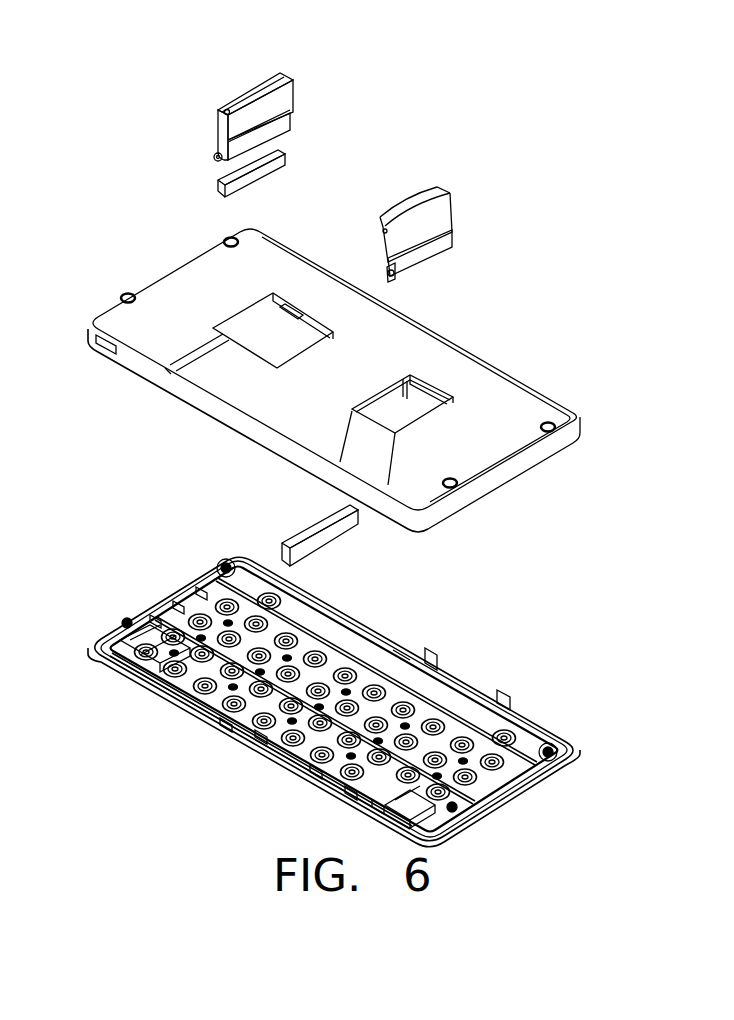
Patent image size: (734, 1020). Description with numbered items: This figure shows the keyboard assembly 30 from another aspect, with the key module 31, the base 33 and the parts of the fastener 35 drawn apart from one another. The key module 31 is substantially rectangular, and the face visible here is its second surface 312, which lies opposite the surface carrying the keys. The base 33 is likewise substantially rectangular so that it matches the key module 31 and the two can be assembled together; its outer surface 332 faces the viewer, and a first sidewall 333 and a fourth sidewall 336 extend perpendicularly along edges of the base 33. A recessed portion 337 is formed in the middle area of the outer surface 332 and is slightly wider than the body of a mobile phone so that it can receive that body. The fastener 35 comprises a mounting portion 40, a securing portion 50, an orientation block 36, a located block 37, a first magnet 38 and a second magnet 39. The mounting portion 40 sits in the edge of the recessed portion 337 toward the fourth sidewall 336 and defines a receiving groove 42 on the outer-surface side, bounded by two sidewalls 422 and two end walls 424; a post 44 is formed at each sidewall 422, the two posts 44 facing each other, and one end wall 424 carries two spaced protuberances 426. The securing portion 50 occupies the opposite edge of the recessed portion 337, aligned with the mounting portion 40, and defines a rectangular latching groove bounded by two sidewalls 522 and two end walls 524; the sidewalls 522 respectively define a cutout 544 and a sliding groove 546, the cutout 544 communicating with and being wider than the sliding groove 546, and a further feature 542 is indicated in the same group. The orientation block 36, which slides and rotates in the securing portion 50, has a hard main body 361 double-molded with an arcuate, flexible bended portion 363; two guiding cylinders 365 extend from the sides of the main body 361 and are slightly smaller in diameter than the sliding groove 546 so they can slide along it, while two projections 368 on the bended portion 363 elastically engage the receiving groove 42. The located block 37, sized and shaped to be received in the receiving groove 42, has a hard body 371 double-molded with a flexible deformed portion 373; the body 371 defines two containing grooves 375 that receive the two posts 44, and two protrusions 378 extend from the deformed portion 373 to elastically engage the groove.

The keyboard 30 is at (384, 51).
The key module 31 is at (540, 682).
The second surface 312 is at (372, 648).
The base 33 is at (598, 410).
The outer surface 332 is at (170, 275).
The first sidewall 333 is at (277, 437).
The fourth sidewall 336 is at (512, 468).
The recessed portion 337 is at (407, 343).
The fastener 35 is at (392, 148).
The orientation block 36 is at (133, 70).
The main body 361 is at (216, 137).
The bended portion 363 is at (222, 124).
The guiding cylinder 365 is at (216, 157).
The projection 368 is at (227, 110).
The located block 37 is at (533, 182).
The body 371 is at (403, 265).
The deformed portion 373 is at (392, 242).
The containing groove 375 is at (392, 276).
The protrusion 378 is at (405, 210).
The first magnet 38 is at (267, 170).
The second magnet 39 is at (330, 540).
The mounting portion 40 is at (568, 298).
The receiving groove 42 is at (413, 402).
The post 44 is at (447, 390).
The sidewall 422 is at (437, 400).
The end wall 424 is at (428, 477).
The protuberance 426 is at (357, 405).
The securing portion 50 is at (70, 406).
The sidewall 522 is at (302, 316).
The end wall 524 is at (254, 315).
The first mounting wall 542 is at (300, 347).
The cutout 544 is at (235, 356).
The sliding groove 546 is at (300, 356).